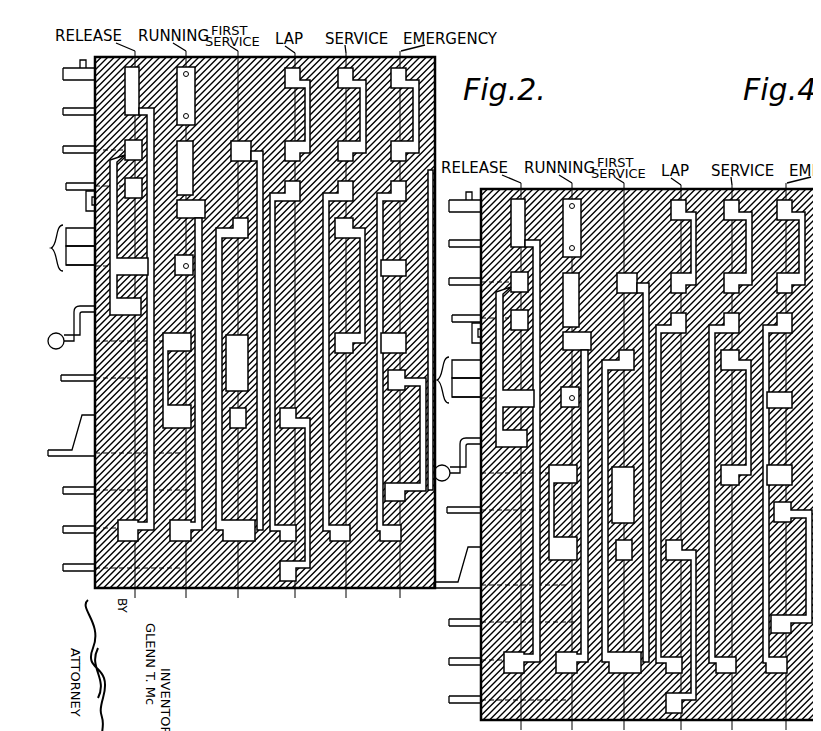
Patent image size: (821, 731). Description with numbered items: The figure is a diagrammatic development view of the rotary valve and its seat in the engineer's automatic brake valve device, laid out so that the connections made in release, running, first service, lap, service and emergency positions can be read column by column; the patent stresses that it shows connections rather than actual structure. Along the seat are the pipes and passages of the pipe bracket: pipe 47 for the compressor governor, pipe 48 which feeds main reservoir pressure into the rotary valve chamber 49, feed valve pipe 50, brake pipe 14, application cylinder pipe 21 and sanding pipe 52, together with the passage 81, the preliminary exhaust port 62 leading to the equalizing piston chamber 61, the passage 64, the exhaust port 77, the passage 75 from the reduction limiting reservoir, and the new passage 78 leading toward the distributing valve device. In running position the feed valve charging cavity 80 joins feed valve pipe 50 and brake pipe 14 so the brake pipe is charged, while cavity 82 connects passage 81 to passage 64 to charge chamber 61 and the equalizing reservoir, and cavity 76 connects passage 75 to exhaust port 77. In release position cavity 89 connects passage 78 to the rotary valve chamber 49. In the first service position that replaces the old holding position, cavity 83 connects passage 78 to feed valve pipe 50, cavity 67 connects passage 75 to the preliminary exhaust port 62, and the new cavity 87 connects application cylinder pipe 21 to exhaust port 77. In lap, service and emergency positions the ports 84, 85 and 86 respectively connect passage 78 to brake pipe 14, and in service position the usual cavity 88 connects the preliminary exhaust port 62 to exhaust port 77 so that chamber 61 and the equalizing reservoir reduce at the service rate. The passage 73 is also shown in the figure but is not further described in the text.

In FIG. 2, the pipe 48 is at (68, 57).
In FIG. 4, the pipe 48 is at (454, 186).
In FIG. 2, the rotary valve chamber 49 is at (80, 50).
In FIG. 4, the rotary valve chamber 49 is at (465, 192).
In FIG. 2, the pipe 47 is at (76, 100).
In FIG. 4, the pipe 47 is at (464, 233).
In FIG. 2, the pipe 50 is at (70, 133).
In FIG. 4, the pipe 50 is at (465, 270).
In FIG. 2, the brake pipe 14 is at (75, 175).
In FIG. 4, the brake pipe 14 is at (466, 308).
In FIG. 2, the passage 81 is at (78, 196).
In FIG. 4, the passage 81 is at (459, 336).
In FIG. 2, the preliminary exhaust port 62 is at (80, 238).
In FIG. 4, the preliminary exhaust port 62 is at (466, 370).
In FIG. 2, the chamber 61 is at (80, 255).
In FIG. 4, the chamber 61 is at (466, 387).
In FIG. 2, the passage 64 is at (70, 258).
In FIG. 4, the passage 64 is at (466, 411).
In FIG. 2, the exhaust port 77 is at (54, 322).
In FIG. 4, the exhaust port 77 is at (457, 455).
In FIG. 2, the application cylinder pipe 21 is at (75, 368).
In FIG. 4, the application cylinder pipe 21 is at (462, 499).
In FIG. 2, the passage 75 is at (52, 442).
In FIG. 4, the passage 75 is at (457, 567).
In FIG. 2, the sanding pipe 52 is at (70, 479).
In FIG. 4, the sanding pipe 52 is at (460, 611).
In FIG. 2, the passage 78 is at (53, 518).
In FIG. 4, the passage 78 is at (459, 648).
In FIG. 2, the feed valve charging cavity 80 is at (185, 166).
In FIG. 4, the feed valve charging cavity 80 is at (584, 300).
In FIG. 2, the cavity 82 is at (197, 198).
In FIG. 4, the cavity 82 is at (589, 338).
In FIG. 2, the cavity 83 is at (240, 496).
In FIG. 4, the cavity 83 is at (565, 467).
In FIG. 2, the cavity 67 is at (230, 326).
In FIG. 4, the cavity 67 is at (621, 476).
In FIG. 2, the cavity 76 is at (176, 372).
In FIG. 4, the cavity 76 is at (563, 512).
In FIG. 2, the cavity 87 is at (232, 350).
In FIG. 4, the cavity 87 is at (653, 472).
In FIG. 2, the cavity 88 is at (352, 258).
In FIG. 4, the cavity 88 is at (733, 417).
In FIG. 2, the cavity 89 is at (180, 456).
In FIG. 4, the cavity 89 is at (564, 511).
In FIG. 2, the passage 73 is at (190, 466).
In FIG. 4, the passage 73 is at (612, 511).
In FIG. 2, the port 84 is at (255, 496).
In FIG. 4, the port 84 is at (667, 493).
In FIG. 2, the port 85 is at (320, 496).
In FIG. 4, the port 85 is at (727, 493).
In FIG. 2, the port 86 is at (372, 470).
In FIG. 4, the port 86 is at (789, 567).